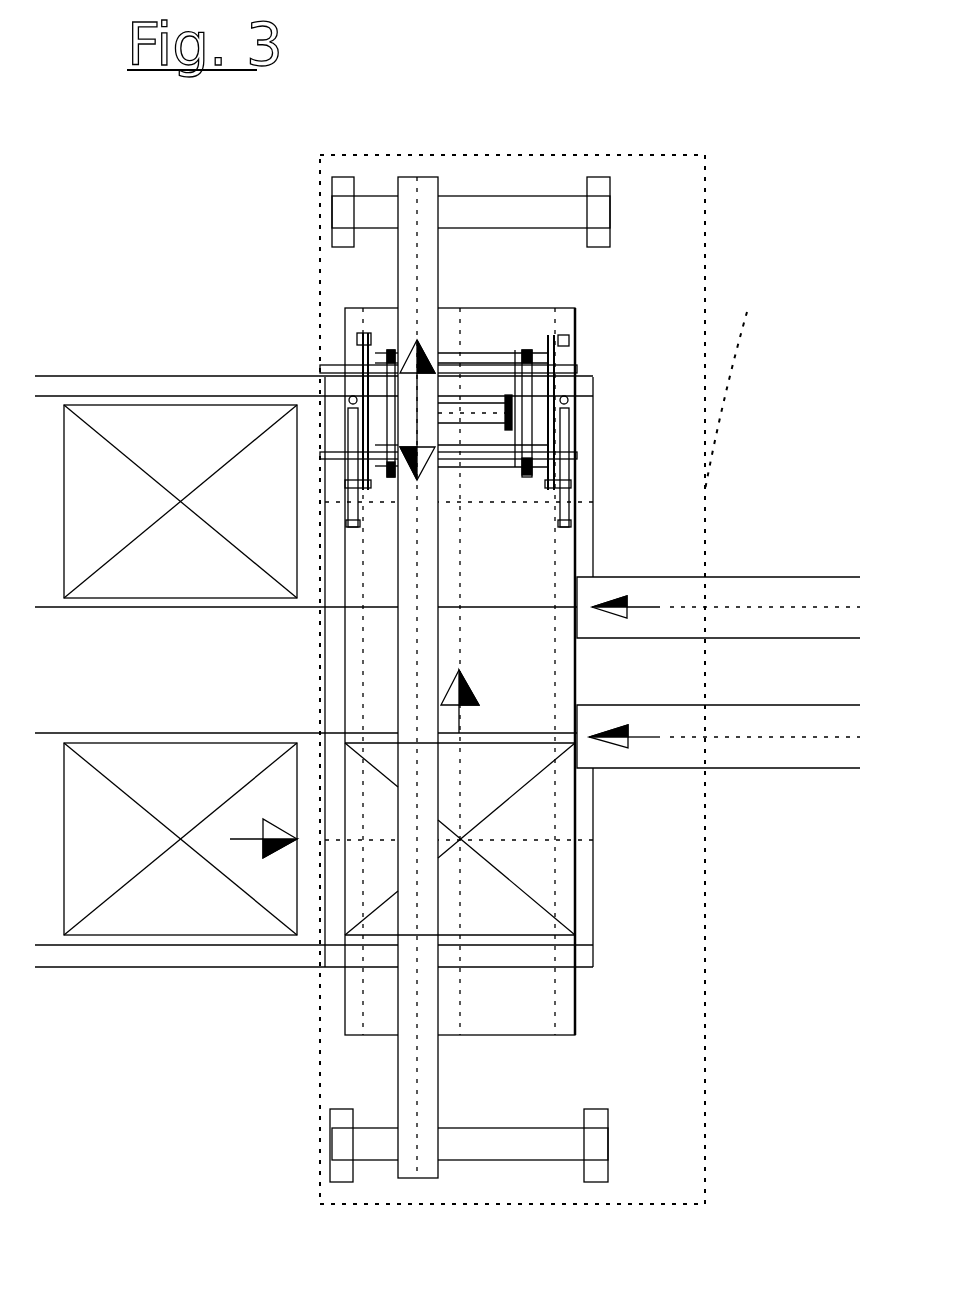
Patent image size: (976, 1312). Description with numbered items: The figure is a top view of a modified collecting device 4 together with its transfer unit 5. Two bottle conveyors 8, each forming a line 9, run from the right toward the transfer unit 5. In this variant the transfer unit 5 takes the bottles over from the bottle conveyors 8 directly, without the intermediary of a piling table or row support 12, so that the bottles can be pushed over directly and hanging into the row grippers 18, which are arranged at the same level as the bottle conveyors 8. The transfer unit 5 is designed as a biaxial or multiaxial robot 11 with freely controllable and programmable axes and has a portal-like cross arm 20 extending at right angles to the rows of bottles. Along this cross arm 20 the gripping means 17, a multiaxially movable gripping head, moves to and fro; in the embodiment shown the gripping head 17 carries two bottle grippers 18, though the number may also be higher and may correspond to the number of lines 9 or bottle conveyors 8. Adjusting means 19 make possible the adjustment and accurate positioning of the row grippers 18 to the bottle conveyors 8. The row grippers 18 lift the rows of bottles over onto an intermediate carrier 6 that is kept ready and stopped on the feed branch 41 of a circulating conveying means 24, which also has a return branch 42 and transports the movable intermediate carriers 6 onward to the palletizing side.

The collecting device 4 is at (533, 607).
The transfer unit 5 is at (548, 118).
The intermediate carrier 6 is at (208, 432).
The bottle conveyor 8 is at (718, 673).
The line 9 is at (718, 673).
The robot 11 is at (470, 596).
The row support 12 is at (788, 593).
The gripping means 17 is at (604, 339).
The row grippers 18 is at (468, 400).
The adjusting means 19 is at (417, 366).
The cross arm 20 is at (425, 283).
The conveying means 24 is at (314, 664).
The feed branch 41 is at (148, 372).
The return branch 42 is at (175, 967).